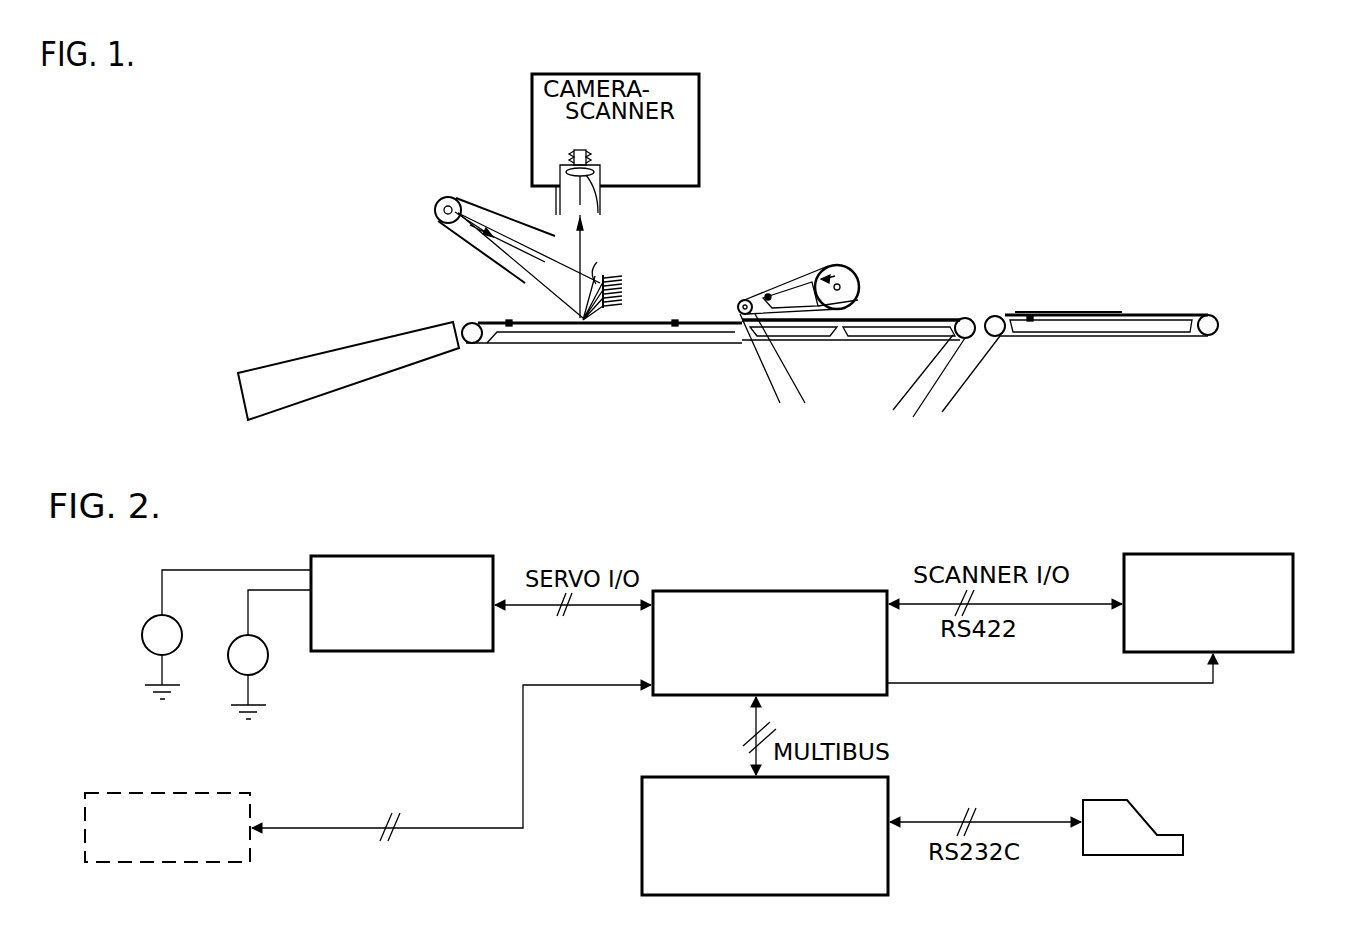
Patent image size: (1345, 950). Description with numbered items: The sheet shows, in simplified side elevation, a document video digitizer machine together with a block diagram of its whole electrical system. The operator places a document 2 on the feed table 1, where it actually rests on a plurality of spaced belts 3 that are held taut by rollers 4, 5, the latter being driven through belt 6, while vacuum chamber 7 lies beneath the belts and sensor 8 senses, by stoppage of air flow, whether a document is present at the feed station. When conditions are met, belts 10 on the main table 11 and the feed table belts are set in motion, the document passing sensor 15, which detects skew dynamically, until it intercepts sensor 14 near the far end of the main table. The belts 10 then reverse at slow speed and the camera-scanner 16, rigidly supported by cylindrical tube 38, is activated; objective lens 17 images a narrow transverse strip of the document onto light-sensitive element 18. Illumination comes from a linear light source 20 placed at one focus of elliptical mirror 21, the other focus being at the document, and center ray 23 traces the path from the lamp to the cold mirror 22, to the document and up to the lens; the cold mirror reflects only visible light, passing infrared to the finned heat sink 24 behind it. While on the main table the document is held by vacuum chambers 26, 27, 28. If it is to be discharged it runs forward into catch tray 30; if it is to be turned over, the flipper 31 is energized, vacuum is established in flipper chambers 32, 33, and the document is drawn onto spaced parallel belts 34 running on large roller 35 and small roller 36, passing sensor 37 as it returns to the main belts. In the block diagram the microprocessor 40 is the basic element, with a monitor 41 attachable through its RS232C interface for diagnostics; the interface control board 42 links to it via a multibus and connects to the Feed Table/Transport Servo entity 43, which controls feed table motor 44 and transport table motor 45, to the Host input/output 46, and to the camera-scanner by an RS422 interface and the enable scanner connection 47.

In FIG. 1, the feed table 1 is at (1177, 313).
In FIG. 1, the document 2 is at (1097, 312).
In FIG. 1, the spaced belts 3 is at (1003, 316).
In FIG. 1, the roller 4 is at (1208, 337).
In FIG. 1, the roller 5 is at (997, 336).
In FIG. 1, the belt 6 is at (965, 379).
In FIG. 1, the vacuum chamber 7 is at (1115, 328).
In FIG. 1, the sensor 8 is at (1033, 315).
In FIG. 1, the belts 10 is at (958, 318).
In FIG. 1, the main table 11 is at (882, 321).
In FIG. 1, the sensor 14 is at (511, 323).
In FIG. 1, the sensor 15 is at (675, 323).
In FIG. 2, the camera-scanner 16 is at (1124, 590).
In FIG. 1, the objective lens 17 is at (600, 196).
In FIG. 1, the light-sensitive element 18 is at (586, 148).
In FIG. 1, the linear light source 20 is at (455, 190).
In FIG. 1, the elliptical mirror 21 is at (486, 208).
In FIG. 1, the cold mirror 22 is at (596, 274).
In FIG. 1, the center ray 23 is at (549, 263).
In FIG. 1, the heat sink 24 is at (623, 284).
In FIG. 1, the vacuum chamber 26 is at (895, 330).
In FIG. 1, the vacuum chamber 27 is at (810, 330).
In FIG. 1, the vacuum chamber 28 is at (630, 333).
In FIG. 1, the catch tray 30 is at (348, 371).
In FIG. 1, the flipper 31 is at (786, 222).
In FIG. 1, the flipper chamber 32 is at (780, 302).
In FIG. 1, the flipper chamber 33 is at (800, 283).
In FIG. 1, the spaced parallel belts 34 is at (858, 300).
In FIG. 1, the large roller 35 is at (852, 275).
In FIG. 1, the small roller 36 is at (739, 304).
In FIG. 1, the sensor 37 is at (766, 296).
In FIG. 1, the cylindrical tube 38 is at (560, 197).
In FIG. 2, the microprocessor 40 is at (890, 797).
In FIG. 2, the monitor 41 is at (1127, 800).
In FIG. 2, the interface control board 42 is at (790, 591).
In FIG. 2, the Feed Table/Transport Servo entity 43 is at (495, 560).
In FIG. 2, the feed table motor 44 is at (266, 650).
In FIG. 2, the transport table motor 45 is at (178, 624).
In FIG. 2, the Host input/output 46 is at (250, 808).
In FIG. 2, the enable scanner connection 47 is at (900, 683).